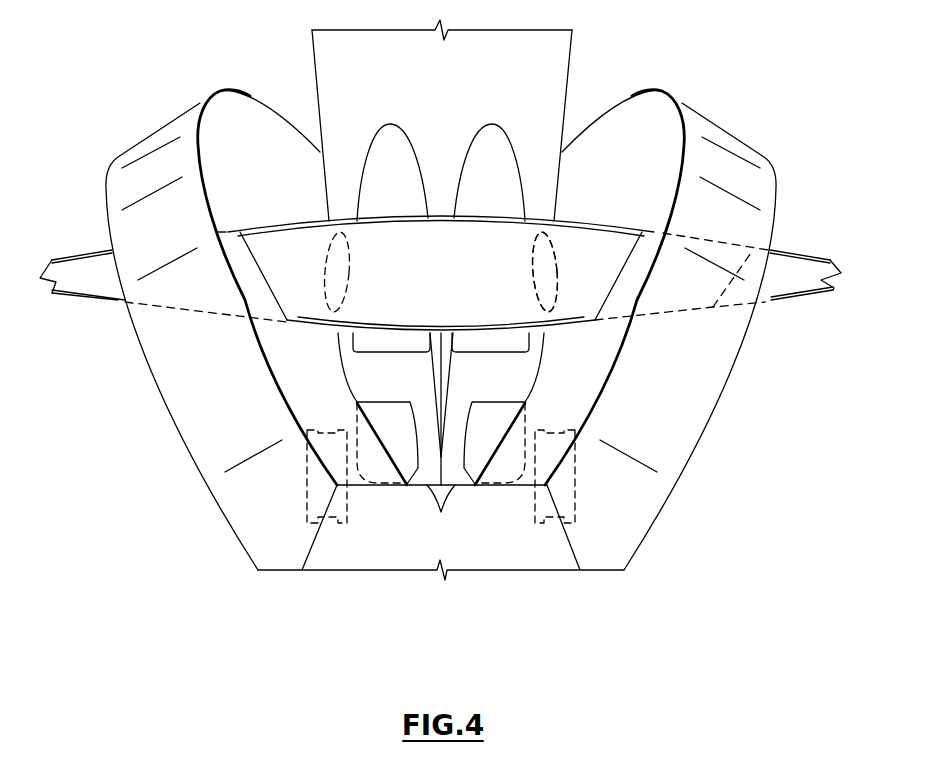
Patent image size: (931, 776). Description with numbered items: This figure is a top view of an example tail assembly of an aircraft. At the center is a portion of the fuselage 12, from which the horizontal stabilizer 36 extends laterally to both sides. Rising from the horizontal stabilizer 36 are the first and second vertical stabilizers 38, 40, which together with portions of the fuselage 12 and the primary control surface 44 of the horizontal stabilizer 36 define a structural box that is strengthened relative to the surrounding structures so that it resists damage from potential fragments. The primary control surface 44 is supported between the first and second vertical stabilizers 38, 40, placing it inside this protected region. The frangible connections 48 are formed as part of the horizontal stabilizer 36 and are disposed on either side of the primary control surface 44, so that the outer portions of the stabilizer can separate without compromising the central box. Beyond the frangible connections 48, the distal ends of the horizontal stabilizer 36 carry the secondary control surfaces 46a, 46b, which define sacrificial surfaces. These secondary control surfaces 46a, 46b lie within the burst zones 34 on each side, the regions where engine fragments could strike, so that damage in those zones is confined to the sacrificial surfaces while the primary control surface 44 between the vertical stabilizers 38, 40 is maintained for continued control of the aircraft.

The fuselage 12 is at (540, 72).
The burst zone 34 is at (225, 425).
The horizontal stabilizer 36 is at (587, 211).
The first vertical stabilizer 38 is at (338, 287).
The second vertical stabilizer 40 is at (537, 270).
The primary control surface 44 is at (470, 262).
The secondary control surface 46a is at (772, 285).
The secondary control surface 46b is at (113, 285).
The frangible connection 48 is at (284, 287).